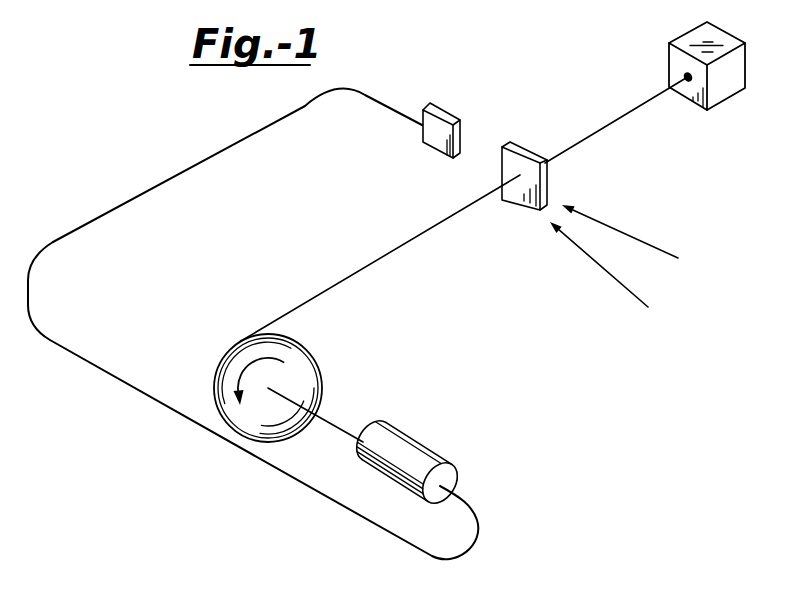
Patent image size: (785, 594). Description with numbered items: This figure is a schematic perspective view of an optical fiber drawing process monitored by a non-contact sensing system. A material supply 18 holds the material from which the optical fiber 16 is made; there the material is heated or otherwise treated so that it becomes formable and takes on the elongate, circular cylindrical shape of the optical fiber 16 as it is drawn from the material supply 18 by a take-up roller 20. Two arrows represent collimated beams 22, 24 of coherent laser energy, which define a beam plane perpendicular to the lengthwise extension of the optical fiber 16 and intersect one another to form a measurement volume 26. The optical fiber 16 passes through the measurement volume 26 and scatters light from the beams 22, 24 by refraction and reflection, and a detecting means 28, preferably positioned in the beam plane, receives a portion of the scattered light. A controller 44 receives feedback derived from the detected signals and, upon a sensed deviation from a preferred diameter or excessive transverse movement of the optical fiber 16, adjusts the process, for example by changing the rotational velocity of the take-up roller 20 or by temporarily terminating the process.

The optical fiber 16 is at (620, 120).
The material supply 18 is at (680, 38).
The take-up roller 20 is at (320, 370).
The collimated laser beam 22 is at (660, 243).
The collimated laser beam 24 is at (623, 287).
The measurement volume 26 is at (520, 143).
The detecting means 28 is at (440, 108).
The controller 44 is at (407, 437).